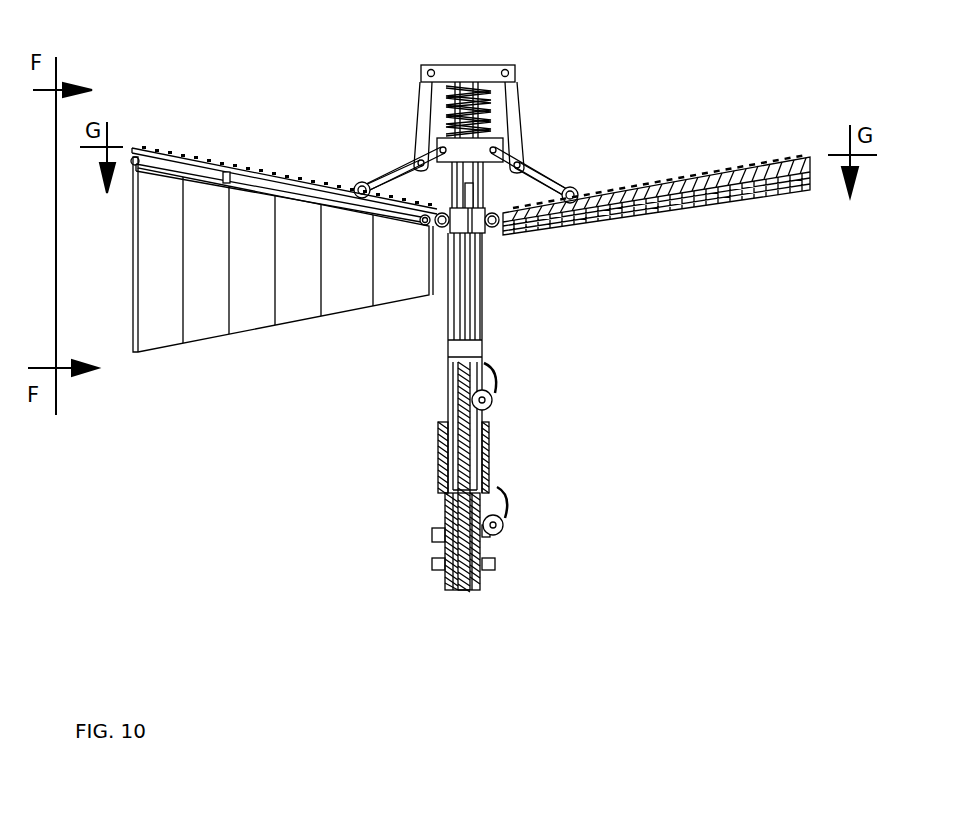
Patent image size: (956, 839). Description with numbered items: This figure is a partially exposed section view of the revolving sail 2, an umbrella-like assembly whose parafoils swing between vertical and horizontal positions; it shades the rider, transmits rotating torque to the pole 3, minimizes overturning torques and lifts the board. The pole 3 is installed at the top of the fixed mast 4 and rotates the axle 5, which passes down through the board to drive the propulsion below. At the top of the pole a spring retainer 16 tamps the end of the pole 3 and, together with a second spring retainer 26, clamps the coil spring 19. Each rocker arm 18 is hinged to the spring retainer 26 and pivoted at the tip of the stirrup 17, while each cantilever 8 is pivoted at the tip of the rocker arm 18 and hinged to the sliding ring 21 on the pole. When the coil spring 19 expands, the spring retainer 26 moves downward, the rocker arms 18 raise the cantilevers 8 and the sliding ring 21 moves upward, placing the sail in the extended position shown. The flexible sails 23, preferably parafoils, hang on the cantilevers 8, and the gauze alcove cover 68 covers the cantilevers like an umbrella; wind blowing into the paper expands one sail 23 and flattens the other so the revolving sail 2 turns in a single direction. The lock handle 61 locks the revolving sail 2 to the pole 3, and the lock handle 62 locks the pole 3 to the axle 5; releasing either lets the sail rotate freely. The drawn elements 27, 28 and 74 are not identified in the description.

The revolving sail 2 is at (645, 78).
The pole 3 is at (483, 328).
The fixed mast 4 is at (502, 497).
The axle 5 is at (445, 553).
The cantilever 8 is at (656, 169).
The spring retainer 16 is at (483, 72).
The stirrup 17 is at (422, 121).
The rocker arm 18 is at (400, 175).
The coil spring 19 is at (493, 120).
The sliding ring 21 is at (478, 248).
The flexible sail 23 is at (225, 323).
The spring retainer 26 is at (473, 148).
The right roller 27 is at (577, 192).
The hub ring 28 is at (483, 233).
The lock handle 61 is at (511, 248).
The lock handle 62 is at (498, 397).
The alcove cover 68 is at (725, 170).
The lower guide wheel 74 is at (508, 522).